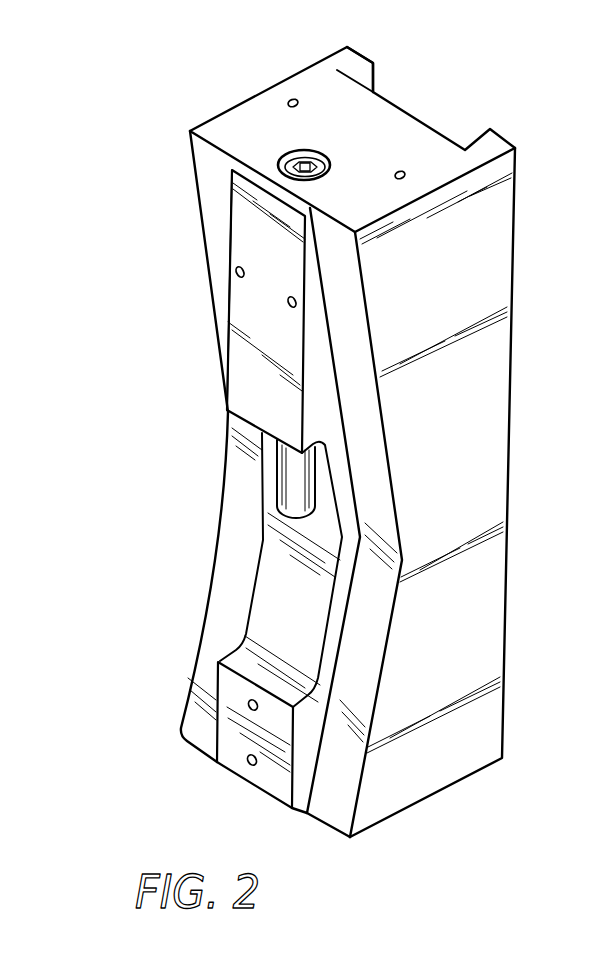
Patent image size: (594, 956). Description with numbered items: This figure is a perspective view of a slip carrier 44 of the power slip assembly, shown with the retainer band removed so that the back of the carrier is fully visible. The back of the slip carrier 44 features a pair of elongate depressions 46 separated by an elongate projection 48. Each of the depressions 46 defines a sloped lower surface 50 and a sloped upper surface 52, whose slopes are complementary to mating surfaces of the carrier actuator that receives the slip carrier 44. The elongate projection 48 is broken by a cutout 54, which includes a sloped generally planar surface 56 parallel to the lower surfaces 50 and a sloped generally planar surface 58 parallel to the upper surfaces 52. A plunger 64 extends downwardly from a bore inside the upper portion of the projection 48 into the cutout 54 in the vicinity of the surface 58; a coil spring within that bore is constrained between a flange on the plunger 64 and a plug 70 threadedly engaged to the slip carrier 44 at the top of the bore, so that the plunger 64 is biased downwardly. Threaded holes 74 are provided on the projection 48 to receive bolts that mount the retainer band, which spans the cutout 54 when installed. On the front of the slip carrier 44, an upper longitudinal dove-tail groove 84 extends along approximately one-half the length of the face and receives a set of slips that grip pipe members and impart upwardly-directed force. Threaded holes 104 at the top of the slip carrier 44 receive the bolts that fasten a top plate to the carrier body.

The slip carrier 44 is at (470, 630).
The elongate depressions 46 is at (232, 500).
The elongate projection 48 is at (246, 354).
The sloped lower surface 50 is at (208, 611).
The sloped upper surface 52 is at (219, 174).
The cutout 54 is at (232, 663).
The sloped generally planar surface 56 is at (276, 611).
The sloped generally planar surface 58 is at (328, 482).
The plunger 64 is at (290, 467).
The plug 70 is at (281, 153).
The threaded holes 74 is at (237, 272).
The upper longitudinal dove-tail groove 84 is at (365, 79).
The threaded holes 104 is at (291, 100).